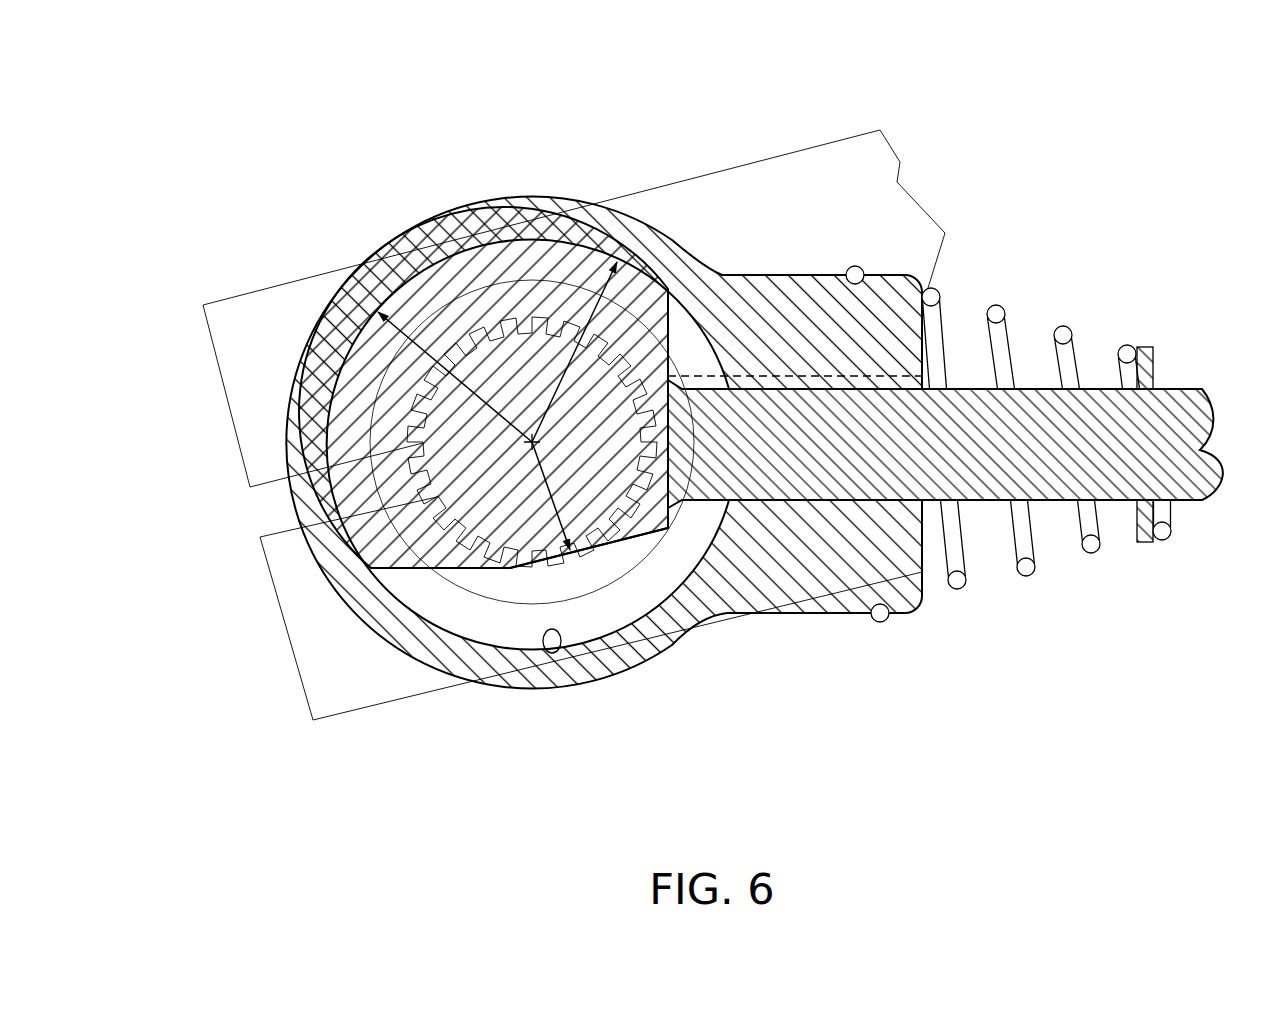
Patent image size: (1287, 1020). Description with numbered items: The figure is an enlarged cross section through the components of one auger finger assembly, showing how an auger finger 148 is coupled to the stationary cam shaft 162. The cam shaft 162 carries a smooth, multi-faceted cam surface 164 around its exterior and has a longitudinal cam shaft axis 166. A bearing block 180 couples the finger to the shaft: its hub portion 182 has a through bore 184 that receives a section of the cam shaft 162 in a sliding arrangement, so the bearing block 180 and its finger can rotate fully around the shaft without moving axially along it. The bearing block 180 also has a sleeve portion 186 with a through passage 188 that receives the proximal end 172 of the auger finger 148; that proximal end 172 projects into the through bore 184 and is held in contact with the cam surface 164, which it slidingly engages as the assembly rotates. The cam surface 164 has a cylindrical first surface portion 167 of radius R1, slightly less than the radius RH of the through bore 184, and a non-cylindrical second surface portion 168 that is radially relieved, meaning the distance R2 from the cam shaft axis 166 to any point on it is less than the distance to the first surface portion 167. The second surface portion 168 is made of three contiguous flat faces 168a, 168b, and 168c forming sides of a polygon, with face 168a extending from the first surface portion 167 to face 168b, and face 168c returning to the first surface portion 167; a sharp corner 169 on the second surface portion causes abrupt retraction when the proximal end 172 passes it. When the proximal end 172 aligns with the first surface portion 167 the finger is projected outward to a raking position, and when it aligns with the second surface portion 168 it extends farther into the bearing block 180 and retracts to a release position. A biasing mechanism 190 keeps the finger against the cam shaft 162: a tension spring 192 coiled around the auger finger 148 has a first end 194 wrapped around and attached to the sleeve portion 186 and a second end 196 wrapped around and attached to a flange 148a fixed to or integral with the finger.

The auger finger 148 is at (1049, 500).
The flange 148a is at (1153, 370).
The cam shaft 162 is at (391, 273).
The cam surface 164 is at (472, 238).
The cam shaft axis 166 is at (528, 435).
The first surface portion 167 is at (335, 362).
The second surface portion 168 is at (373, 571).
The face 168a is at (400, 574).
The face 168b is at (602, 550).
The face 168c is at (690, 300).
The corner 169 is at (667, 513).
The proximal end 172 is at (703, 490).
The bearing block 180 is at (649, 668).
The hub portion 182 is at (490, 669).
The through bore 184 is at (565, 652).
The sleeve portion 186 is at (845, 614).
The through passage 188 is at (751, 360).
The biasing mechanism 190 is at (1055, 421).
The tension spring 192 is at (1001, 336).
The first end 194 is at (858, 267).
The second end 196 is at (1167, 540).
The radius of first surface portion R1 is at (349, 381).
The distance to second surface portion R2 is at (402, 638).
The radius of through bore RH is at (590, 300).